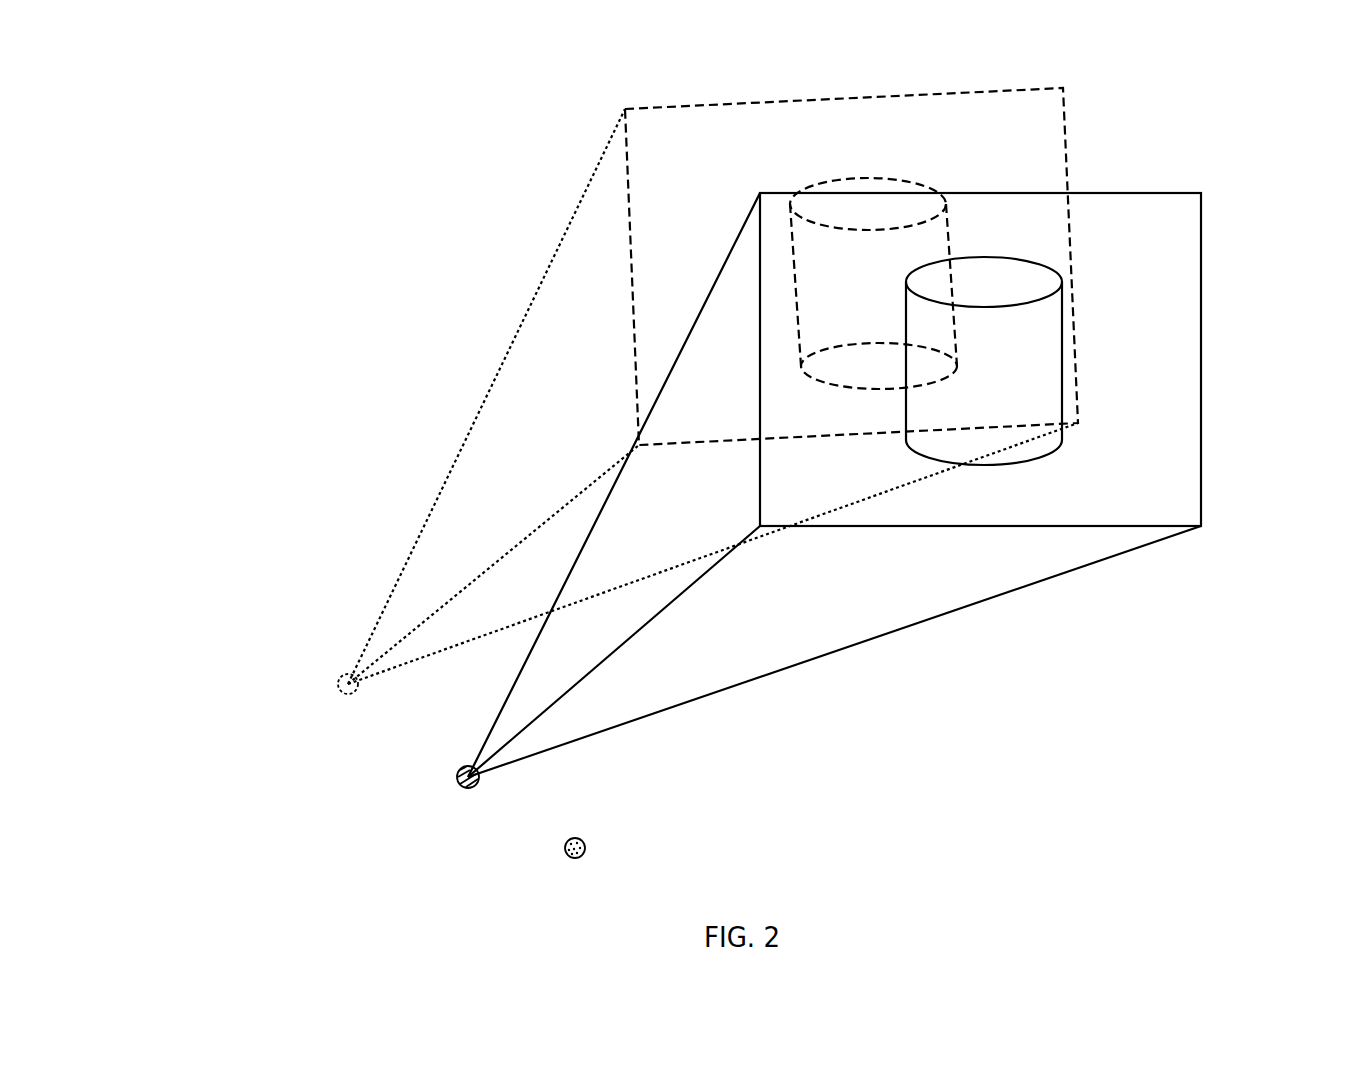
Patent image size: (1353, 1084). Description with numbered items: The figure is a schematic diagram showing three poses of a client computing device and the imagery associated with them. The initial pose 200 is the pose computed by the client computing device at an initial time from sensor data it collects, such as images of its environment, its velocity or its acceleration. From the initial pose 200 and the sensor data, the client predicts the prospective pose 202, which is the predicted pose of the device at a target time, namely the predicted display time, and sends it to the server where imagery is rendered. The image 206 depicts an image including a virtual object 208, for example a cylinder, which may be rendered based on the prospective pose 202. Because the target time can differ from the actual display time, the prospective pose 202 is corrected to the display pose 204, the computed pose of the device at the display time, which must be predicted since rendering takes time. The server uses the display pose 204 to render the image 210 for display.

The initial pose 200 is at (547, 858).
The prospective pose 202 is at (560, 840).
The display pose 204 is at (438, 755).
The image 206 is at (1201, 237).
The virtual object 208 is at (1023, 260).
The image 210 is at (903, 98).